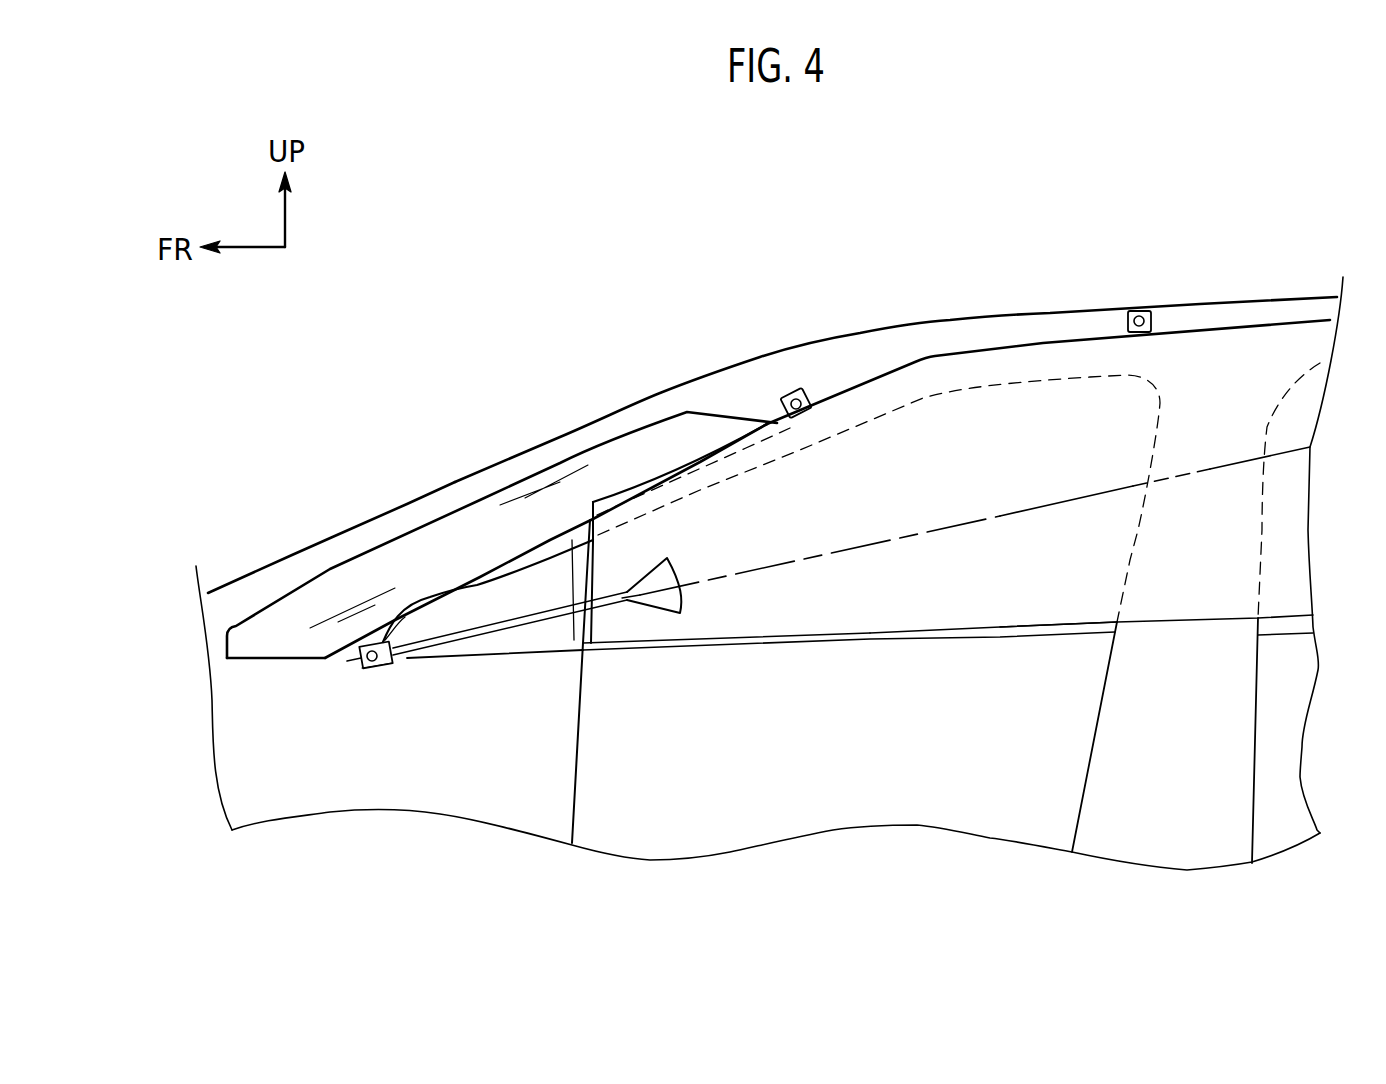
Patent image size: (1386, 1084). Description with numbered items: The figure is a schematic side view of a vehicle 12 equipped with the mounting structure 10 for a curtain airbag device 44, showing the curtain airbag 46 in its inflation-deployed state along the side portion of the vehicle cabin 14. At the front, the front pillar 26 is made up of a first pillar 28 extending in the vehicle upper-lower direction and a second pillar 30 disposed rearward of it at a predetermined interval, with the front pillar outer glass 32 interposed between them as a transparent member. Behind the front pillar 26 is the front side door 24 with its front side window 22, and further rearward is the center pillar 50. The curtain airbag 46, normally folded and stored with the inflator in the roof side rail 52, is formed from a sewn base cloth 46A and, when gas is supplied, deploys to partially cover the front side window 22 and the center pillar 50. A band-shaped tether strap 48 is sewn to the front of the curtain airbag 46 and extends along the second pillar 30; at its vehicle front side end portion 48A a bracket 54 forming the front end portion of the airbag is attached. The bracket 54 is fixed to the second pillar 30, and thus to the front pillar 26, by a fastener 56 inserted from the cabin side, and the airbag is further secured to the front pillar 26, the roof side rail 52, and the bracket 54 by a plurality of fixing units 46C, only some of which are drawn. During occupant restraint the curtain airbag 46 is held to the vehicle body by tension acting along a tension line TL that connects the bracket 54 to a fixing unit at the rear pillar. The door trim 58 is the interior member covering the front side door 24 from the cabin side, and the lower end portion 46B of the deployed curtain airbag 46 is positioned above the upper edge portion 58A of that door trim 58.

The mounting structure for a curtain airbag device 10 is at (880, 294).
The vehicle 12 is at (645, 292).
The vehicle cabin 14 is at (656, 777).
The front side window 22 is at (927, 632).
The front side door 24 is at (895, 834).
The front pillar 26 is at (456, 468).
The first pillar 28 is at (337, 530).
The second pillar 30 is at (477, 585).
The front pillar outer glass 32 is at (433, 545).
The curtain airbag device 44 is at (1248, 322).
The curtain airbag 46 is at (833, 600).
The base cloth 46A is at (685, 625).
The lower end portion of the curtain airbag 46B is at (893, 623).
The fixing unit 46C is at (802, 393).
The tether strap 48 is at (510, 630).
The vehicle front side end portion 48A is at (402, 655).
The center pillar 50 is at (1182, 638).
The roof side rail 52 is at (1027, 323).
The bracket 54 is at (385, 640).
The fastener 56 is at (372, 668).
The door trim 58 is at (902, 712).
The upper edge portion of the door trim 58A is at (1005, 625).
The tension line TL is at (860, 547).